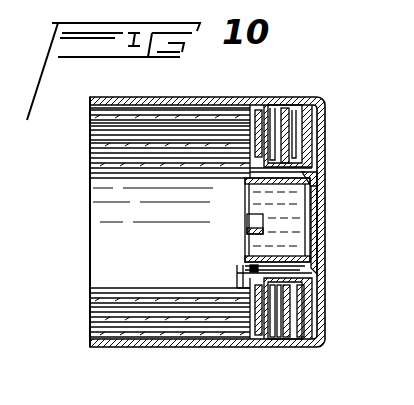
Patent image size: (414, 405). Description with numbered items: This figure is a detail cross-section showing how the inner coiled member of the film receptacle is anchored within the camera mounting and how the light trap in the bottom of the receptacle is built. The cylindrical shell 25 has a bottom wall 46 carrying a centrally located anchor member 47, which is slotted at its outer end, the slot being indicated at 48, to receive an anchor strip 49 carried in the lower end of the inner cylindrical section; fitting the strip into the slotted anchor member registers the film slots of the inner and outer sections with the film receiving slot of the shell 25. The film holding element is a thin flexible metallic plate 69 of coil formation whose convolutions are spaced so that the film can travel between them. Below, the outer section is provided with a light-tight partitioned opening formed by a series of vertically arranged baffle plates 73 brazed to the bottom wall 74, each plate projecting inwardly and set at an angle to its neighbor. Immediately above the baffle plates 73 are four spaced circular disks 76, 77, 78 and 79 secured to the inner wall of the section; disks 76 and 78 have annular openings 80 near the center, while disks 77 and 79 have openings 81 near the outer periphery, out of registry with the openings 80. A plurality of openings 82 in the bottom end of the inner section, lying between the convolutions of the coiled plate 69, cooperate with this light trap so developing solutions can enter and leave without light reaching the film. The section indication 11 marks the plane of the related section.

The cylindrical shell 25 is at (222, 100).
The thin flexible metallic plate 69 is at (123, 307).
The baffle plates 73 is at (306, 127).
The bottom wall 74 is at (323, 149).
The disk 77 is at (273, 160).
The disk 76 is at (294, 155).
The section line 11 is at (290, 80).
The bottom wall 46 is at (322, 180).
The anchor member 47 is at (322, 203).
The slot 48 is at (243, 206).
The anchor strip 49 is at (236, 232).
The annular openings 80 is at (318, 268).
The openings 82 is at (245, 295).
The openings 81 is at (267, 310).
The disk 79 is at (277, 310).
The disk 78 is at (287, 320).